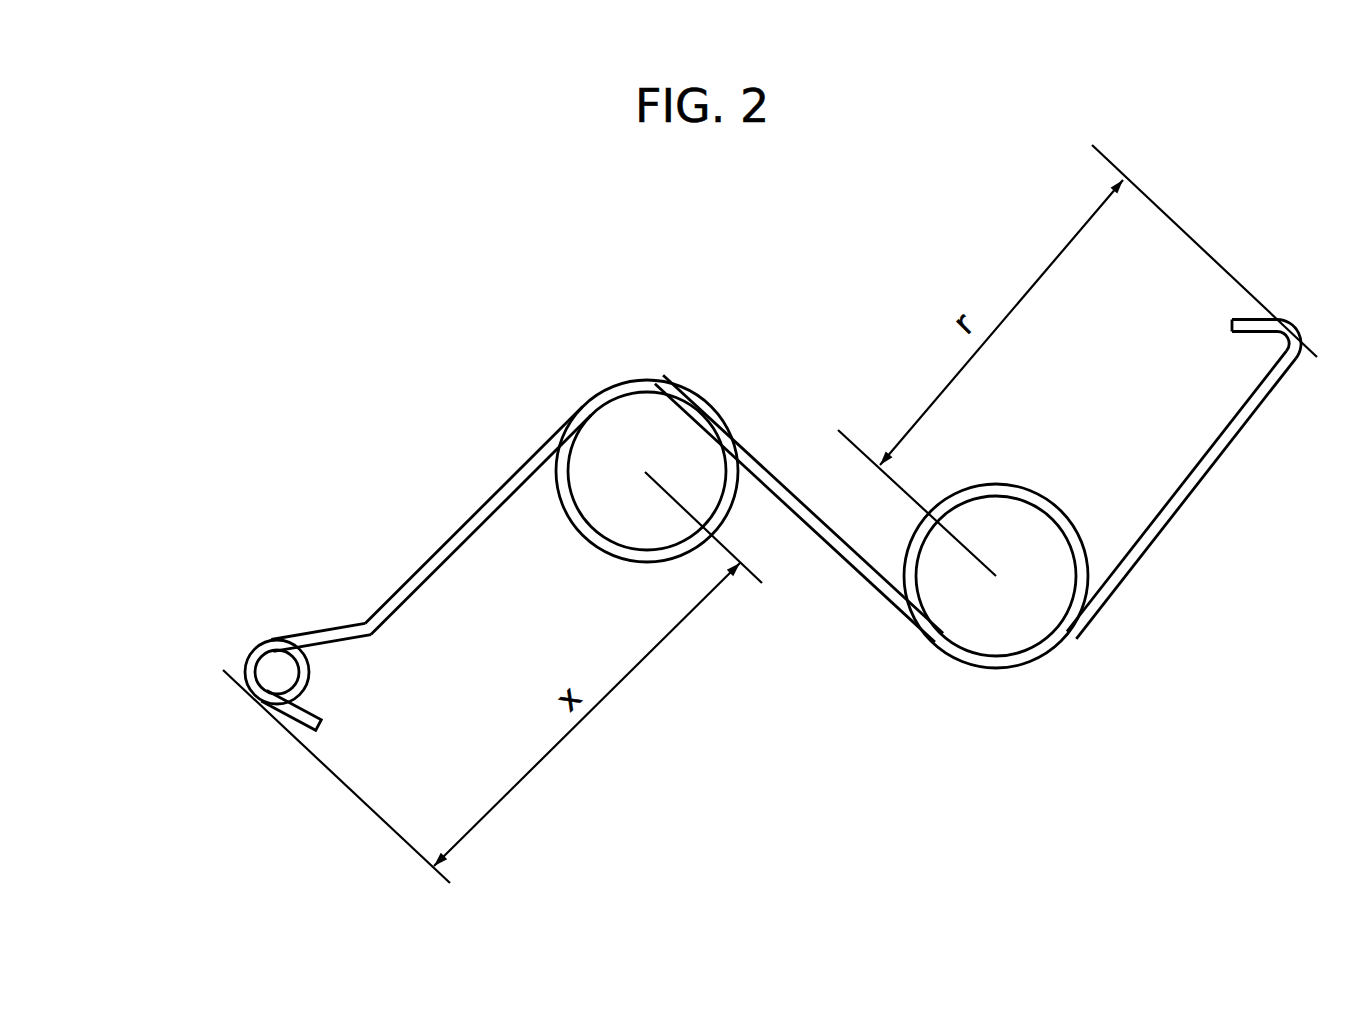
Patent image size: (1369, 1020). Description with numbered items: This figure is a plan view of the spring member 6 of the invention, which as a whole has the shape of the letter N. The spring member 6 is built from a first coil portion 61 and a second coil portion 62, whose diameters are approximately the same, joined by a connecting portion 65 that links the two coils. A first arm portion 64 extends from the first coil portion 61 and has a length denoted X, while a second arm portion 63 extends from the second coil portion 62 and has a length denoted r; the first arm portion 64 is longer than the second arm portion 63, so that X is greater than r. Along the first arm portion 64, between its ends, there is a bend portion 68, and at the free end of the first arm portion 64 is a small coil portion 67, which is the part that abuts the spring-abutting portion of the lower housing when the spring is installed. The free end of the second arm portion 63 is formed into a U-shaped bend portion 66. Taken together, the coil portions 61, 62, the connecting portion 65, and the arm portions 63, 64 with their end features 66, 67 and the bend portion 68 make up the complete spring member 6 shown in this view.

The spring member 6 is at (397, 287).
The first coil portion 61 is at (627, 437).
The second coil portion 62 is at (995, 602).
The second arm portion 63 is at (1172, 518).
The first arm portion 64 is at (463, 530).
The connecting portion 65 is at (822, 538).
The U-shaped bend portion 66 is at (1282, 323).
The small coil portion 67 is at (260, 650).
The bend portion 68 is at (362, 623).